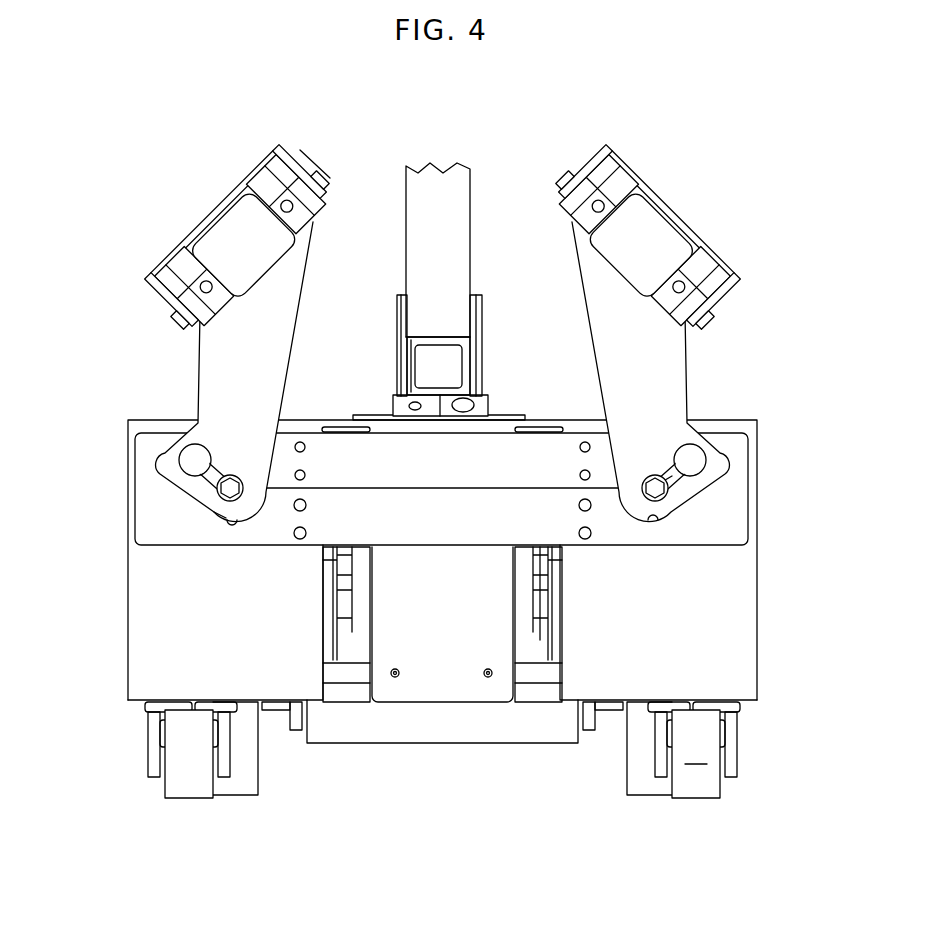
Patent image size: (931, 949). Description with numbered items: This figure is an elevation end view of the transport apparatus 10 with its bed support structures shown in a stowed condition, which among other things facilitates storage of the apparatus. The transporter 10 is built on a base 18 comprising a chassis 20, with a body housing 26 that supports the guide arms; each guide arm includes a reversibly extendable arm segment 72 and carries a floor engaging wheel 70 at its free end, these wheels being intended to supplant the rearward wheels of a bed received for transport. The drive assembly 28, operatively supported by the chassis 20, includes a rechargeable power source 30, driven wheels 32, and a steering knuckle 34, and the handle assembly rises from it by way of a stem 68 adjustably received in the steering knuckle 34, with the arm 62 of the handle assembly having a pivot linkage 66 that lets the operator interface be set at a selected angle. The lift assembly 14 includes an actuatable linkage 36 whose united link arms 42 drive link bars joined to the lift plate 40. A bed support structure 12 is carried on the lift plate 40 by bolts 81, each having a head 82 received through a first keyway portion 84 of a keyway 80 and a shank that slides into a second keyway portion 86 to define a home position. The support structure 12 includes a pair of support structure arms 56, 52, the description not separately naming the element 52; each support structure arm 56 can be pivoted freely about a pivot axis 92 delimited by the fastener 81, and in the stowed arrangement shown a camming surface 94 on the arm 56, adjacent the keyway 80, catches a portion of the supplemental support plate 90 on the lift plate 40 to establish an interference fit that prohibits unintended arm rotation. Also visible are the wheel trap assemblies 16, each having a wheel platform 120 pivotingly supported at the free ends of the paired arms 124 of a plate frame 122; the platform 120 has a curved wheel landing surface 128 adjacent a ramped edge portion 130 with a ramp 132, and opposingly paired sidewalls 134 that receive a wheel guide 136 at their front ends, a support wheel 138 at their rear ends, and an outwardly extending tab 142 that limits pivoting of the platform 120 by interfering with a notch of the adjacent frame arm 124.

The transport apparatus 10 is at (72, 421).
The bed support structure 12 is at (764, 312).
The lift assembly 14 is at (123, 528).
The wheel trap assembly 16 is at (331, 164).
The base 18 is at (104, 627).
The chassis 20 is at (269, 722).
The body housing 26 is at (167, 684).
The drive assembly 28 is at (505, 392).
The power source 30 is at (436, 734).
The driven wheels 32 is at (617, 783).
The steering knuckle 34 is at (396, 406).
The linkage 36 is at (522, 632).
The lift plate 40 is at (725, 535).
The link arms 42 is at (535, 578).
The right arm 52 is at (628, 367).
The support structure arms 56 is at (240, 367).
The arm 62 is at (425, 227).
The pivot linkage 66 is at (499, 335).
The stem 68 is at (410, 347).
The ground engaging wheel 70 is at (200, 764).
The extendable arm segment 72 is at (147, 738).
The keyway 80 is at (642, 463).
The bolt 81 is at (199, 496).
The head 82 is at (224, 505).
The first keyway portion 84 is at (681, 450).
The second keyway portion 86 is at (680, 471).
The supplemental support plate 90 is at (338, 524).
The pivot axis 92 is at (232, 480).
The camming surface 94 is at (251, 521).
The wheel platform 120 is at (182, 194).
The plate frame 122 is at (139, 293).
The arms 124 is at (167, 296).
The wheel landing surface 128 is at (240, 257).
The ramped edge portion 130 is at (235, 182).
The ramp 132 is at (232, 208).
The sidewalls 134 is at (283, 160).
The wheel guide 136 is at (163, 267).
The support wheel 138 is at (218, 302).
The tab 142 is at (320, 189).